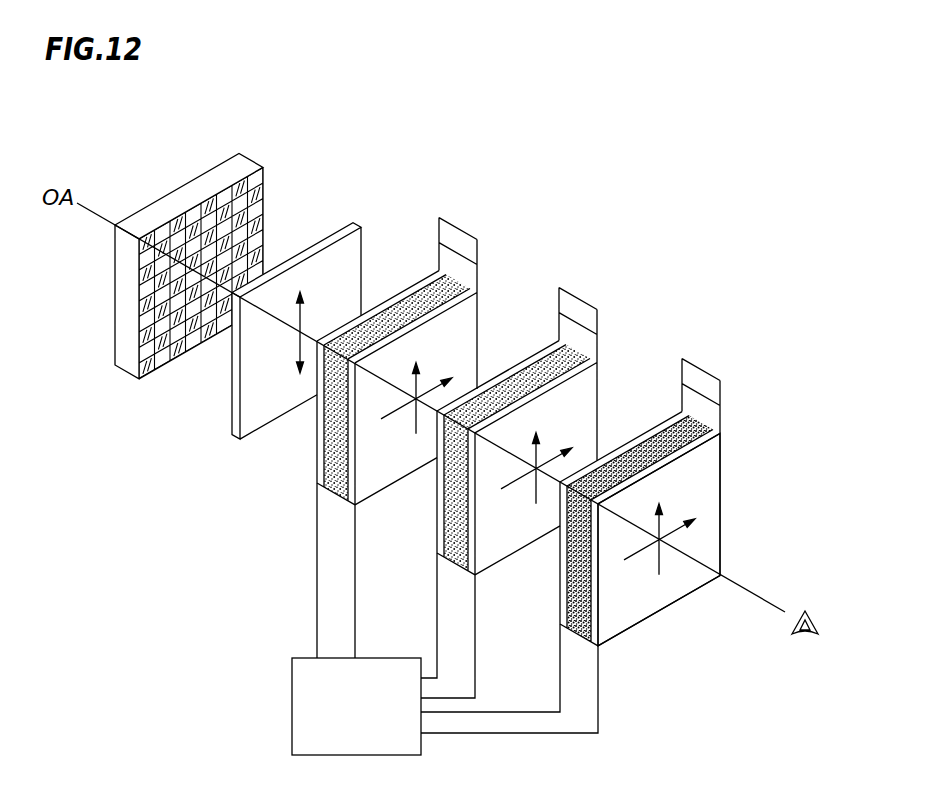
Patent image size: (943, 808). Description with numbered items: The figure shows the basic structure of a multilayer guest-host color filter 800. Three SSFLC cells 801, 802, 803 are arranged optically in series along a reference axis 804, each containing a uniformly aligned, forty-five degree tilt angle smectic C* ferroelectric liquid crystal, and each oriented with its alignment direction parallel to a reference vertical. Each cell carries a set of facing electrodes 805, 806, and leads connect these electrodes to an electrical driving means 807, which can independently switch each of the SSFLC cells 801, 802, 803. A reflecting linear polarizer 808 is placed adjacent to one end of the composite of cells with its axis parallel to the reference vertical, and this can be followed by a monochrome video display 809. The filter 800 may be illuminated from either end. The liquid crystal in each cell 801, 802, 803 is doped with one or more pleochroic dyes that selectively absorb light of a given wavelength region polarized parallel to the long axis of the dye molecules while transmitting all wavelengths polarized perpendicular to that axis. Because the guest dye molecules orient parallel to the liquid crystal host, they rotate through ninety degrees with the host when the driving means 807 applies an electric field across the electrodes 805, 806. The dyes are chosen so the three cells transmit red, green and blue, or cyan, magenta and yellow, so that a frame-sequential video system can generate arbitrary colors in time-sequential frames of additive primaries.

The multilayer guest-host color filter 800 is at (636, 230).
The SSFLC cell 801 is at (313, 458).
The SSFLC cell 802 is at (437, 515).
The SSFLC cell 803 is at (610, 537).
The reference axis 804 is at (748, 588).
The facing electrode 805 is at (625, 447).
The facing electrode 806 is at (688, 487).
The electrical driving means 807 is at (292, 697).
The reflecting linear polarizer 808 is at (353, 222).
The monochrome video display 809 is at (253, 160).